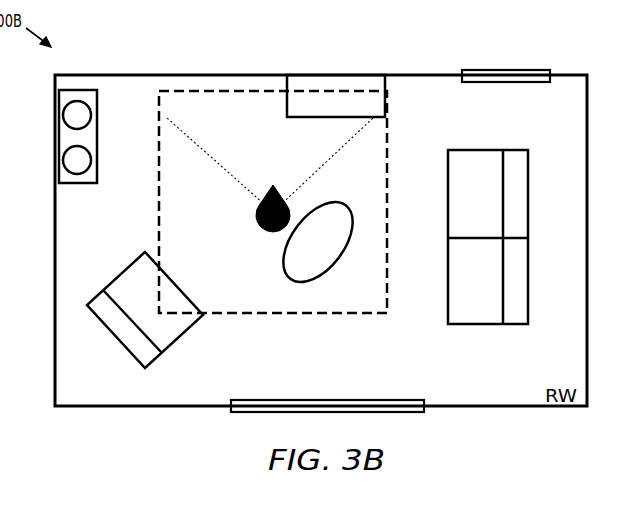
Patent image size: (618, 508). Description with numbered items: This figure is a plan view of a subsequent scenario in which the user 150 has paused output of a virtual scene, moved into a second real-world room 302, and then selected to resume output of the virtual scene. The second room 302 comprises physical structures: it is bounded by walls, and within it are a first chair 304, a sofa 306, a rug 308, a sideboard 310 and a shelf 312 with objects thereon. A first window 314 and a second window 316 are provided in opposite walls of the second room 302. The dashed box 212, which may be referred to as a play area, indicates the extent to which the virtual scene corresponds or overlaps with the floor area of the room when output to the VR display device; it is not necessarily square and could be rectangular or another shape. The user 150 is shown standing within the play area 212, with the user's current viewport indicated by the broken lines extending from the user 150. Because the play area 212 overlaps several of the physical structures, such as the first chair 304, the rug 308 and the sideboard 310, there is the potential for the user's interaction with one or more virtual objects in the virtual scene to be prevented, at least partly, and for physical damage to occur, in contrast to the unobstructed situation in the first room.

The second room 302 is at (54, 250).
The shelf 312 is at (63, 143).
The sideboard 310 is at (348, 113).
The first window 314 is at (508, 75).
The sofa 306 is at (493, 219).
The dashed box 212 is at (373, 307).
The rug 308 is at (333, 250).
The user 150 is at (257, 223).
The first chair 304 is at (148, 301).
The second window 316 is at (423, 412).